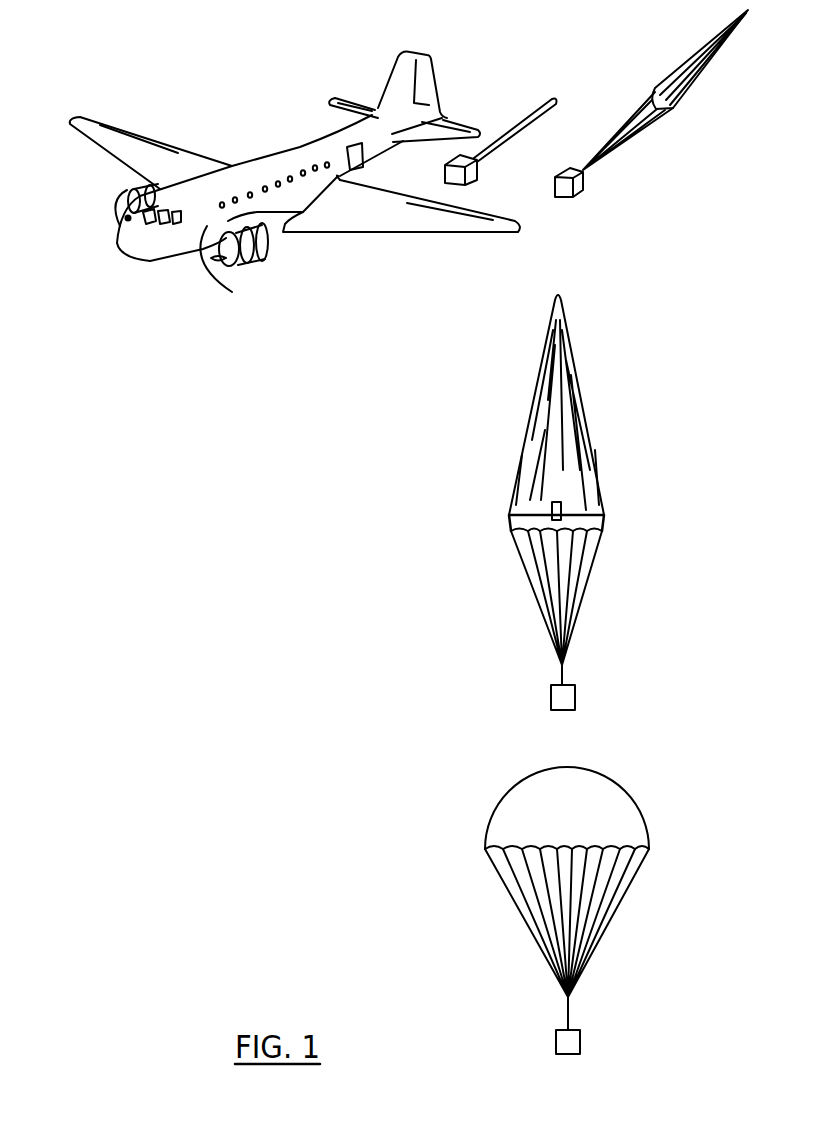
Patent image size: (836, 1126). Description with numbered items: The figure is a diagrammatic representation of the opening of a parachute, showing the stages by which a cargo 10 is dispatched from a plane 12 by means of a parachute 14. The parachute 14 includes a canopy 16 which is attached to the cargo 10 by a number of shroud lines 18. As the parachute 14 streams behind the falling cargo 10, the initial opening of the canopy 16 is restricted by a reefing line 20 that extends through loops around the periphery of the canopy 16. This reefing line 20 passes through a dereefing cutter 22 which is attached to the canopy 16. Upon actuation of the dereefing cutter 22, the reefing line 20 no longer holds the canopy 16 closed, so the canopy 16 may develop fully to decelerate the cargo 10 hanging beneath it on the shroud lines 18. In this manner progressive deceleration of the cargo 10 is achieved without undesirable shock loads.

The cargo 10 is at (468, 183).
The plane 12 is at (330, 236).
The parachute 14 is at (600, 520).
The canopy 16 is at (690, 62).
The shroud lines 18 is at (651, 120).
The reefing line 20 is at (532, 514).
The dereefing cutter 22 is at (565, 503).